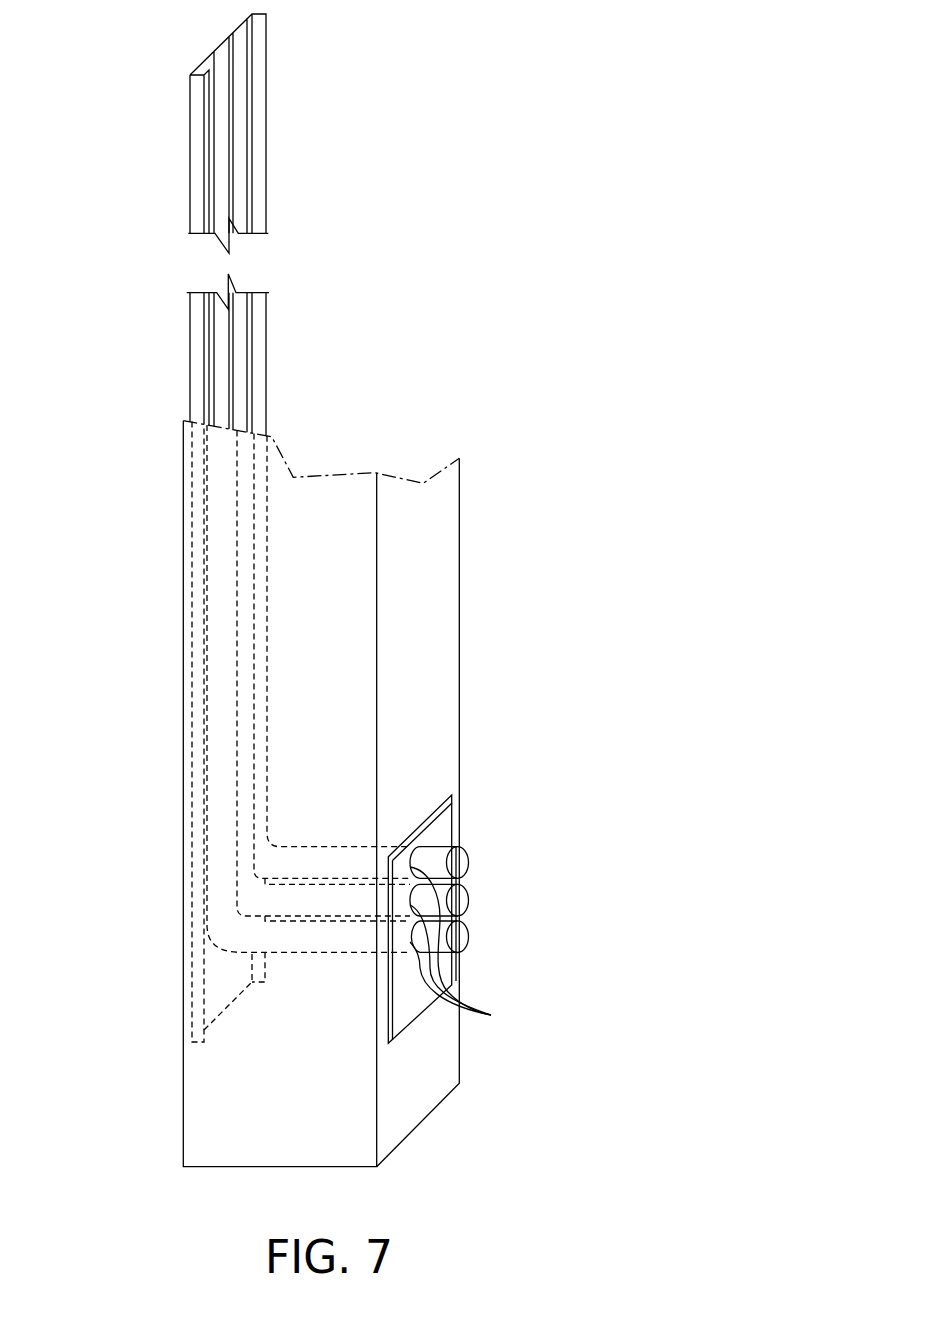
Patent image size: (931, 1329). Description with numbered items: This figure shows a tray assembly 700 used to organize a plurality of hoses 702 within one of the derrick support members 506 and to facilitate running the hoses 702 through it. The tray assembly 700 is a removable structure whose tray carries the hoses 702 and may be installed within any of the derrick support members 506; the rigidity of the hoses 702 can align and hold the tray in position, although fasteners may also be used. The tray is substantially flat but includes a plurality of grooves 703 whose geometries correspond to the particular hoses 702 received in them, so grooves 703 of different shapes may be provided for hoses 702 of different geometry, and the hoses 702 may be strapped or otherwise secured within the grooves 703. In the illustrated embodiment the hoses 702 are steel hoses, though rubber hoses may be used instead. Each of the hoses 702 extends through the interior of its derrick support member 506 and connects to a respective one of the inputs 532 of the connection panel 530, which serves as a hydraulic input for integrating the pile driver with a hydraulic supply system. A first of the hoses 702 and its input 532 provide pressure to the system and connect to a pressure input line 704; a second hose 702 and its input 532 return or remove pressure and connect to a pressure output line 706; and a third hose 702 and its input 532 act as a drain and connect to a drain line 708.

The grooves 703 is at (250, 107).
The derrick support members 506 is at (548, 540).
The tray assembly 700 is at (192, 1008).
The hoses 702 is at (324, 826).
The connection panel 530 is at (492, 804).
The pressure input line 704 is at (530, 862).
The pressure output line 706 is at (530, 900).
The drain line 708 is at (530, 937).
The inputs 532 is at (480, 1012).